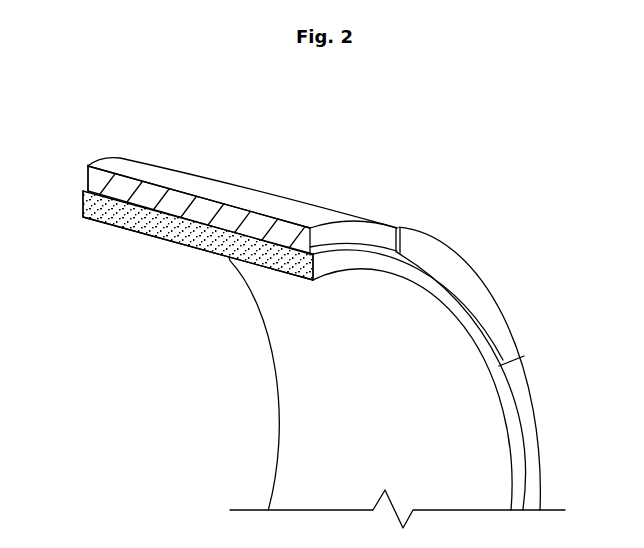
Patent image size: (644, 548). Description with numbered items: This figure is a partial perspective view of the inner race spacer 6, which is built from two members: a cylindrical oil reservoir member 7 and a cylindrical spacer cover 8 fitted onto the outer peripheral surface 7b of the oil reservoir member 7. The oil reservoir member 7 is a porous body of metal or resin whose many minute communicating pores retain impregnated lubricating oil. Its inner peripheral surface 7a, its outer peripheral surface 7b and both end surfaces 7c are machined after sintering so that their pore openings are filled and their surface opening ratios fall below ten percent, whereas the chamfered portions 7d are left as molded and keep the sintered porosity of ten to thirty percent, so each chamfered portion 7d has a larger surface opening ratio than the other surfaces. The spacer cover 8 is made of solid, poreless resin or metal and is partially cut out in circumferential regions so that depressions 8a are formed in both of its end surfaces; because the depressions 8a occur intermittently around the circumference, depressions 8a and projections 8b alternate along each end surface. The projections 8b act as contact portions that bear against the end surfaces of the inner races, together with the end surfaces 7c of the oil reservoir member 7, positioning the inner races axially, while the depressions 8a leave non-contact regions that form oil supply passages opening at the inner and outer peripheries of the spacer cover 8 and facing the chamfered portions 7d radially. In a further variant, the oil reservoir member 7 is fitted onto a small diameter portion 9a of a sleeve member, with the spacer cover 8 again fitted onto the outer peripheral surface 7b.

The inner race spacer 6 is at (485, 219).
The oil reservoir member 7 is at (134, 235).
The inner peripheral surface 7a is at (182, 247).
The outer peripheral surface 7b is at (212, 224).
The end surface 7c is at (83, 203).
The chamfered portion 7d is at (88, 189).
The spacer cover 8 is at (181, 177).
The depression 8a is at (350, 237).
The projection 8b is at (490, 302).
The small diameter portion 9a is at (527, 408).